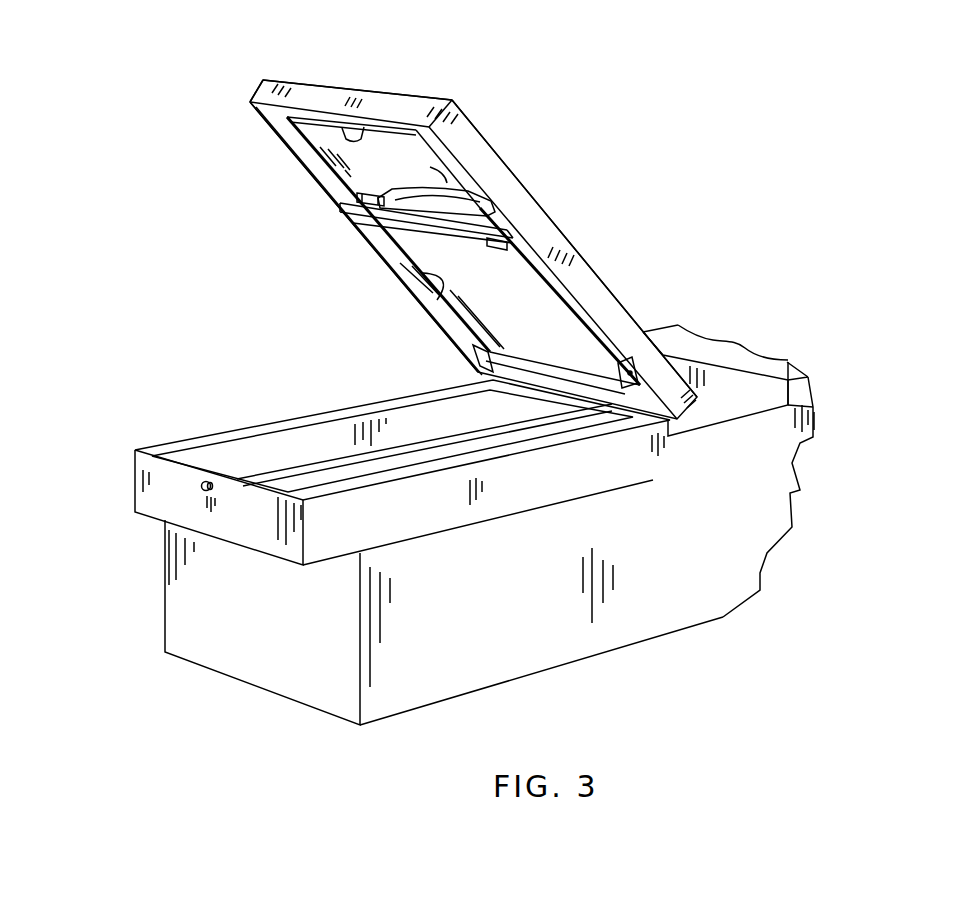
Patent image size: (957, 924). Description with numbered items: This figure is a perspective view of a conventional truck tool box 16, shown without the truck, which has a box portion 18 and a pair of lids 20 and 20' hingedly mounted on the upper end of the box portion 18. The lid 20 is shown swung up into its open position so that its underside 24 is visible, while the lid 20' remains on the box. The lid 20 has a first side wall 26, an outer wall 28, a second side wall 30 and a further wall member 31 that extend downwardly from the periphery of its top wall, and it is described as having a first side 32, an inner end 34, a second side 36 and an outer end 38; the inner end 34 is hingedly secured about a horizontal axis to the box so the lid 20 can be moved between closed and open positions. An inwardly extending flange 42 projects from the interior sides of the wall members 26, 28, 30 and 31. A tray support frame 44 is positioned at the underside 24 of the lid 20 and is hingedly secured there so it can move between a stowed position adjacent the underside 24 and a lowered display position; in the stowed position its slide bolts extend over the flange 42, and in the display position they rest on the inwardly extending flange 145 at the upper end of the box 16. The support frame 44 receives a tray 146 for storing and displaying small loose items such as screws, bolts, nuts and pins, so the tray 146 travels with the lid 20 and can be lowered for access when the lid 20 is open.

The truck tool box 16 is at (803, 488).
The box portion 18 is at (432, 682).
The inwardly extending flange 145 is at (288, 423).
The lid 20 is at (426, 233).
The lid 20' is at (767, 342).
The underside 24 is at (495, 203).
The first side wall 26 is at (293, 157).
The outer wall 28 is at (262, 83).
The second side wall 30 is at (536, 213).
The wall member 31 is at (643, 397).
The first side 32 is at (360, 265).
The inner end 34 is at (693, 420).
The second side 36 is at (590, 240).
The outer end 38 is at (373, 80).
The inwardly extending flange 42 is at (437, 276).
The tray support frame 44 is at (472, 342).
The tray 146 is at (503, 203).